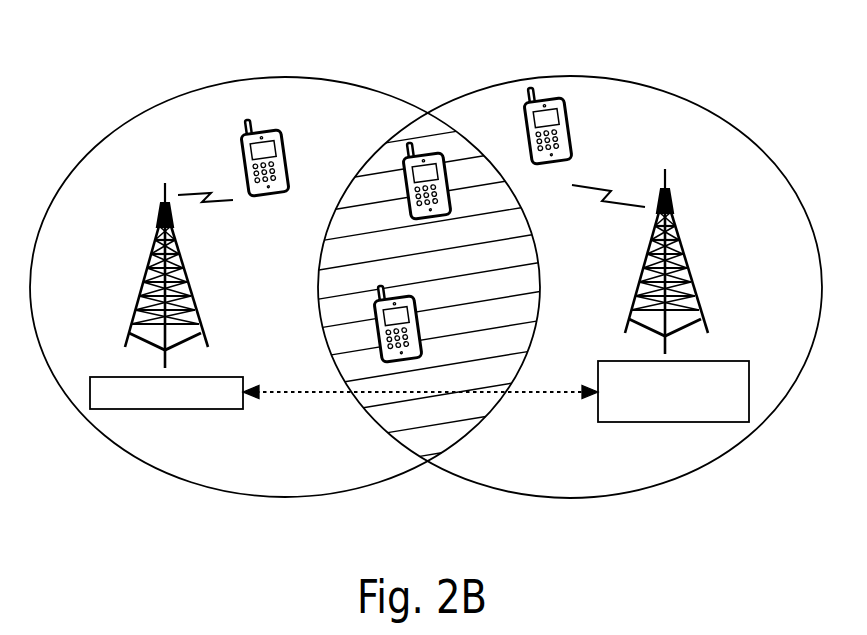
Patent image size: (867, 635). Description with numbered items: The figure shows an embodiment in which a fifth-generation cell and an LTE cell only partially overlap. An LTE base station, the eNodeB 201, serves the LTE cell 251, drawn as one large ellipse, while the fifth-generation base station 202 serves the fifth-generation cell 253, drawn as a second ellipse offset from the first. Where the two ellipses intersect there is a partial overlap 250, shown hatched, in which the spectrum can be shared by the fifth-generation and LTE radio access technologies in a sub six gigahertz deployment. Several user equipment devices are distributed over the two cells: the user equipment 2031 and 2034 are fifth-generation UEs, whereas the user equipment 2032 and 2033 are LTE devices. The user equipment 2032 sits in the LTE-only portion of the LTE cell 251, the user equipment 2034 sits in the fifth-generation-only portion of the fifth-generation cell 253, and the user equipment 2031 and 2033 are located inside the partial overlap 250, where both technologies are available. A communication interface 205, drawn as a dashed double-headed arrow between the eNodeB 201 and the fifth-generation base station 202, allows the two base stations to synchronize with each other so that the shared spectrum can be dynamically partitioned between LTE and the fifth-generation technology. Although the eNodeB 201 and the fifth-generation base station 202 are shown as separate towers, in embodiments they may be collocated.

The LTE cell 251 is at (182, 87).
The 5G cell 253 is at (648, 78).
The partial overlap 250 is at (402, 130).
The LTE base station (eNodeB) 201 is at (212, 409).
The 5G base station 202 is at (642, 422).
The communication interface 205 is at (341, 393).
The user equipment 2031 is at (445, 205).
The user equipment 2032 is at (283, 136).
The user equipment 2033 is at (416, 330).
The user equipment 2034 is at (568, 120).